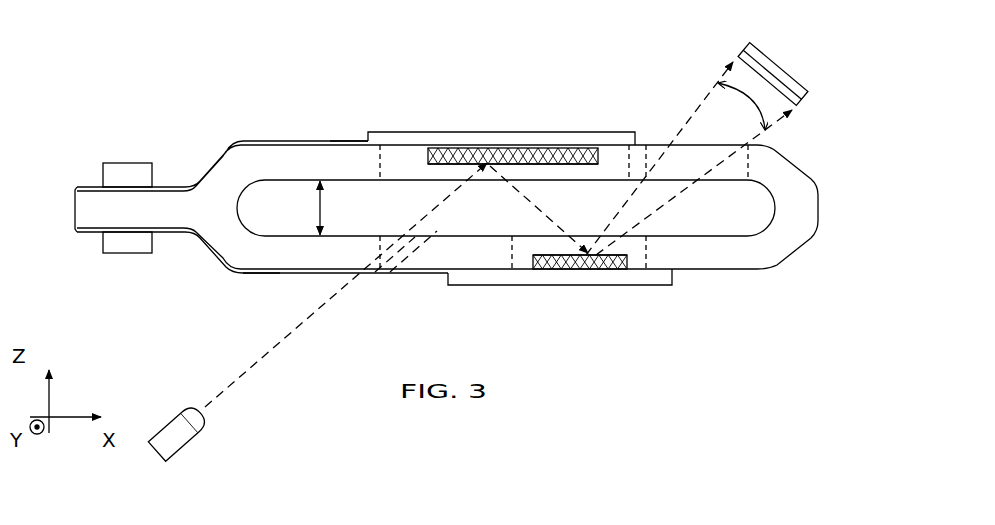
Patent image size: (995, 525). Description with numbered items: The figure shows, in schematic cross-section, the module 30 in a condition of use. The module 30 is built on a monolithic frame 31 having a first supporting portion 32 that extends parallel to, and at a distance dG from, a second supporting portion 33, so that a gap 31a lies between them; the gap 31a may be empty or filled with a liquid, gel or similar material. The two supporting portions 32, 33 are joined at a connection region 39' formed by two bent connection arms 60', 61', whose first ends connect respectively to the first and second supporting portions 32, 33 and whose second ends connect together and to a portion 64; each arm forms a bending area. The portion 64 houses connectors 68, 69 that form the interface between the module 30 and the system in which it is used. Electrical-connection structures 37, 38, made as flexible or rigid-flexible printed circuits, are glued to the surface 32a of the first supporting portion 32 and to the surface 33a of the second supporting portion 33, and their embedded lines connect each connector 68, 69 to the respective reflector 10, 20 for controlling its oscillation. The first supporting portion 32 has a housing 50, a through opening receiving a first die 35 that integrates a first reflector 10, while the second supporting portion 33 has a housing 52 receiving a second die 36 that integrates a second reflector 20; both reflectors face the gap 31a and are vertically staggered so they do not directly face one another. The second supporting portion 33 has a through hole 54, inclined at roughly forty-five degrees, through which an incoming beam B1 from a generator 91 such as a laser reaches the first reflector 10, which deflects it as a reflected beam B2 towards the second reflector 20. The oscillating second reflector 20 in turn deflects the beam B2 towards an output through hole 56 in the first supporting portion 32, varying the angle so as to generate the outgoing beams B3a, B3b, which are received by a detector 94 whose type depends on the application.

The first reflector 10 is at (467, 164).
The second reflector 20 is at (563, 269).
The module 30 is at (336, 89).
The frame 31 is at (775, 149).
The gap 31a is at (730, 222).
The first supporting portion 32 is at (372, 146).
The surface of the first supporting portion 32a is at (317, 138).
The second supporting portion 33 is at (297, 262).
The surface of the second supporting portion 33a is at (260, 281).
The first die 35 is at (534, 146).
The second die 36 is at (595, 270).
The electrical-connection structure 37 is at (335, 140).
The electrical-connection structure 38 is at (252, 274).
The connection region 39' is at (161, 144).
The housing 50 is at (417, 157).
The housing 52 is at (639, 255).
The through hole 54 is at (403, 256).
The through hole 56 is at (657, 146).
The connection arm 60' is at (227, 145).
The connection arm 61' is at (204, 260).
The portion 64 is at (92, 208).
The connector 68 is at (138, 170).
The connector 69 is at (112, 240).
The generator 91 is at (185, 432).
The detector 94 is at (783, 80).
The incoming beam B1 is at (274, 354).
The reflected beam B2 is at (569, 226).
The beam B3a is at (704, 100).
The beam B3b is at (744, 140).
The distance dG is at (300, 208).